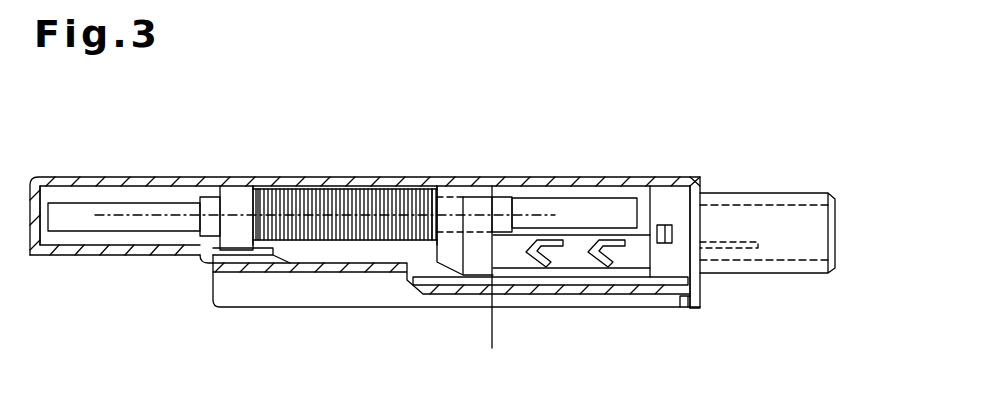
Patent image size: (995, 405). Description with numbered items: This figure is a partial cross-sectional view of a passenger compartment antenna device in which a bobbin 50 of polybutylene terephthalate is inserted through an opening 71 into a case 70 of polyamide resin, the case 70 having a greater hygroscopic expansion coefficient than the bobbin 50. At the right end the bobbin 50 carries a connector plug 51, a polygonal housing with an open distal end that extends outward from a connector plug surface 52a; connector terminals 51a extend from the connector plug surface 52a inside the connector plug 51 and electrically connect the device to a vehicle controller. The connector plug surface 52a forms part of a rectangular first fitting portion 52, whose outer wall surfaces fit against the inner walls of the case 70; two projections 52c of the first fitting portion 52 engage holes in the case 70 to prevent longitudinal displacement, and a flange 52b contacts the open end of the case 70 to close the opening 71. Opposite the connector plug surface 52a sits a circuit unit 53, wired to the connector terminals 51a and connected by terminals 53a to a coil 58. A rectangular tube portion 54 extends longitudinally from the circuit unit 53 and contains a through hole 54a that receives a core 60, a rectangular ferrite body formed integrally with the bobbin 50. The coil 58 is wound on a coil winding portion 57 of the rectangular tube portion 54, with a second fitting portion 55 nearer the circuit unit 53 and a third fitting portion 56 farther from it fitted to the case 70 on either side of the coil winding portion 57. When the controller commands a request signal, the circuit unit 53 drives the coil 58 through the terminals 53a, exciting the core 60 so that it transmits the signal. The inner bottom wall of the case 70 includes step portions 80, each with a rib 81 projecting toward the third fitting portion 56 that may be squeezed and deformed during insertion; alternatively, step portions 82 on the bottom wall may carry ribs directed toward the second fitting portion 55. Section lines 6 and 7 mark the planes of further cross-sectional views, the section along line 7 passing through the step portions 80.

The bobbin 50 is at (645, 190).
The connector plug 51 is at (790, 193).
The connector terminals 51a is at (752, 250).
The first fitting portion 52 is at (668, 294).
The connector plug surface 52a is at (700, 188).
The flange 52b is at (708, 302).
The projections 52c is at (658, 243).
The circuit unit 53 is at (526, 286).
The terminals 53a is at (612, 237).
The rectangular tube portion 54 is at (345, 178).
The through hole 54a is at (246, 195).
The second fitting portion 55 is at (405, 196).
The third fitting portion 56 is at (258, 190).
The coil winding portion 57 is at (348, 188).
The coil 58 is at (343, 228).
The core 60 is at (520, 186).
The case 70 is at (558, 186).
The opening 71 is at (690, 188).
The step portions 80 is at (217, 273).
The rib 81 is at (207, 240).
The step portions 82 is at (492, 280).
The section line 6 is at (477, 338).
The section line 7- 7 is at (237, 332).